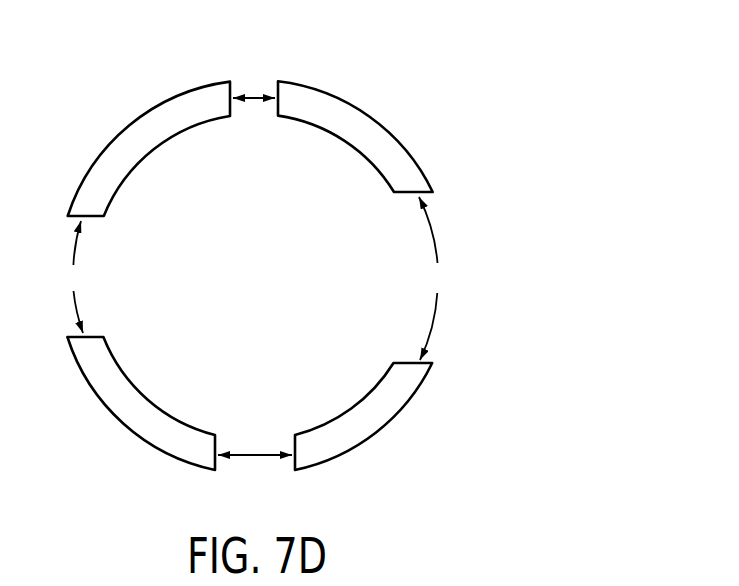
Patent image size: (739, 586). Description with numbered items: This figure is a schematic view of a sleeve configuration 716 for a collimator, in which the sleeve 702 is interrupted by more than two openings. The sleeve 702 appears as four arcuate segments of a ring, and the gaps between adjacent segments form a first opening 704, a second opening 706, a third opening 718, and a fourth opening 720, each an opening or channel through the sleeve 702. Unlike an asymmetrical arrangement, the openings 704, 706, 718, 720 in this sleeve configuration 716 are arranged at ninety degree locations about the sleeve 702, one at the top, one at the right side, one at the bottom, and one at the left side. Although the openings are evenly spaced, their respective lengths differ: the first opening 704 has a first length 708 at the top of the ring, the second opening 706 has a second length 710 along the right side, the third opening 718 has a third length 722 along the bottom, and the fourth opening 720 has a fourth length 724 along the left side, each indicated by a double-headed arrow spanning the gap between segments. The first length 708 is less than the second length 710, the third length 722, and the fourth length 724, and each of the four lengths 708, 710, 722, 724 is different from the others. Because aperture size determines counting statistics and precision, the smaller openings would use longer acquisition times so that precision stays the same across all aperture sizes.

The sleeve 702 is at (362, 127).
The first opening 704 is at (266, 127).
The second opening 706 is at (396, 326).
The first length 708 is at (257, 93).
The second length 710 is at (438, 278).
The sleeve configuration 716 is at (322, 277).
The third opening 718 is at (256, 434).
The fourth opening 720 is at (110, 304).
The third length 722 is at (258, 457).
The fourth length 724 is at (77, 277).